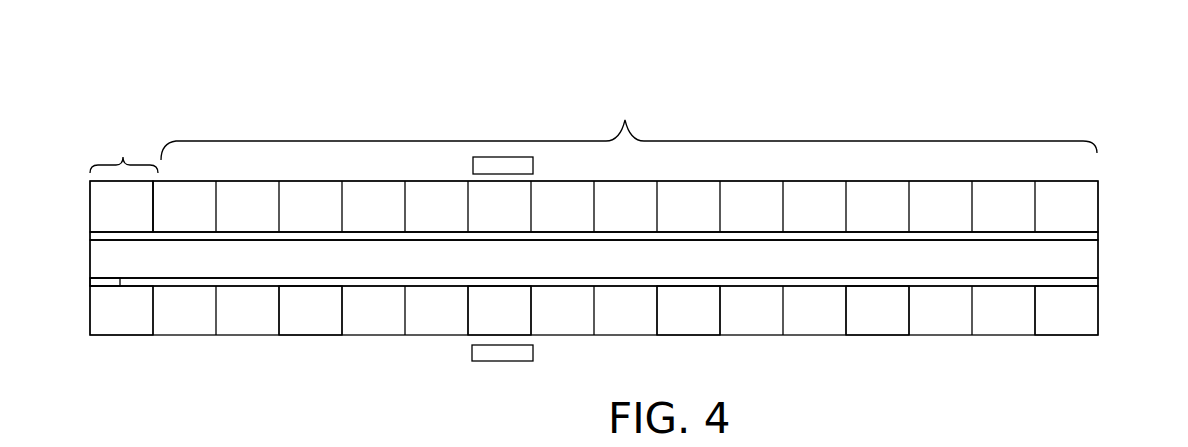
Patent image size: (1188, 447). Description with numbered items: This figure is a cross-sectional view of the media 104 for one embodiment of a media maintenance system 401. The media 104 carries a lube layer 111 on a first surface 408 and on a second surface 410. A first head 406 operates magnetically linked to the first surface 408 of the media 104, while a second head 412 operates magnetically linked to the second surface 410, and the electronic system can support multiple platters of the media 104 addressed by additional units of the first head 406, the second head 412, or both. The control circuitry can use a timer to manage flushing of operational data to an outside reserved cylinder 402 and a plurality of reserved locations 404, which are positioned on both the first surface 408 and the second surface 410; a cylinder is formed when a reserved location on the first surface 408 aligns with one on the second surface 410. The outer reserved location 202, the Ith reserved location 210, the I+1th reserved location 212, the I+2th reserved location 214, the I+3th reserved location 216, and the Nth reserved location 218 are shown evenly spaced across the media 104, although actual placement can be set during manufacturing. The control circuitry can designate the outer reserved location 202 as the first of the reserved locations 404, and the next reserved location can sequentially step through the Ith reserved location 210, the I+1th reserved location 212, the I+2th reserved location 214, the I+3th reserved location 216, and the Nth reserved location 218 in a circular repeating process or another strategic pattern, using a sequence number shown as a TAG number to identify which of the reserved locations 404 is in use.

The media maintenance system 401 is at (198, 57).
The outside reserved cylinder 402 is at (123, 157).
The reserved locations 404 is at (625, 120).
The first head 406 is at (510, 167).
The first surface 408 is at (1106, 243).
The second surface 410 is at (1106, 278).
The media 104 is at (1037, 270).
The lube layer 111 is at (102, 283).
The outer reserved location 202 is at (117, 320).
The Ith reserved location 210 is at (328, 336).
The I+1th reserved location 212 is at (513, 323).
The I+2th reserved location 214 is at (702, 325).
The I+3th reserved location 216 is at (898, 325).
The Nth reserved location 218 is at (1072, 325).
The second head 412 is at (508, 355).